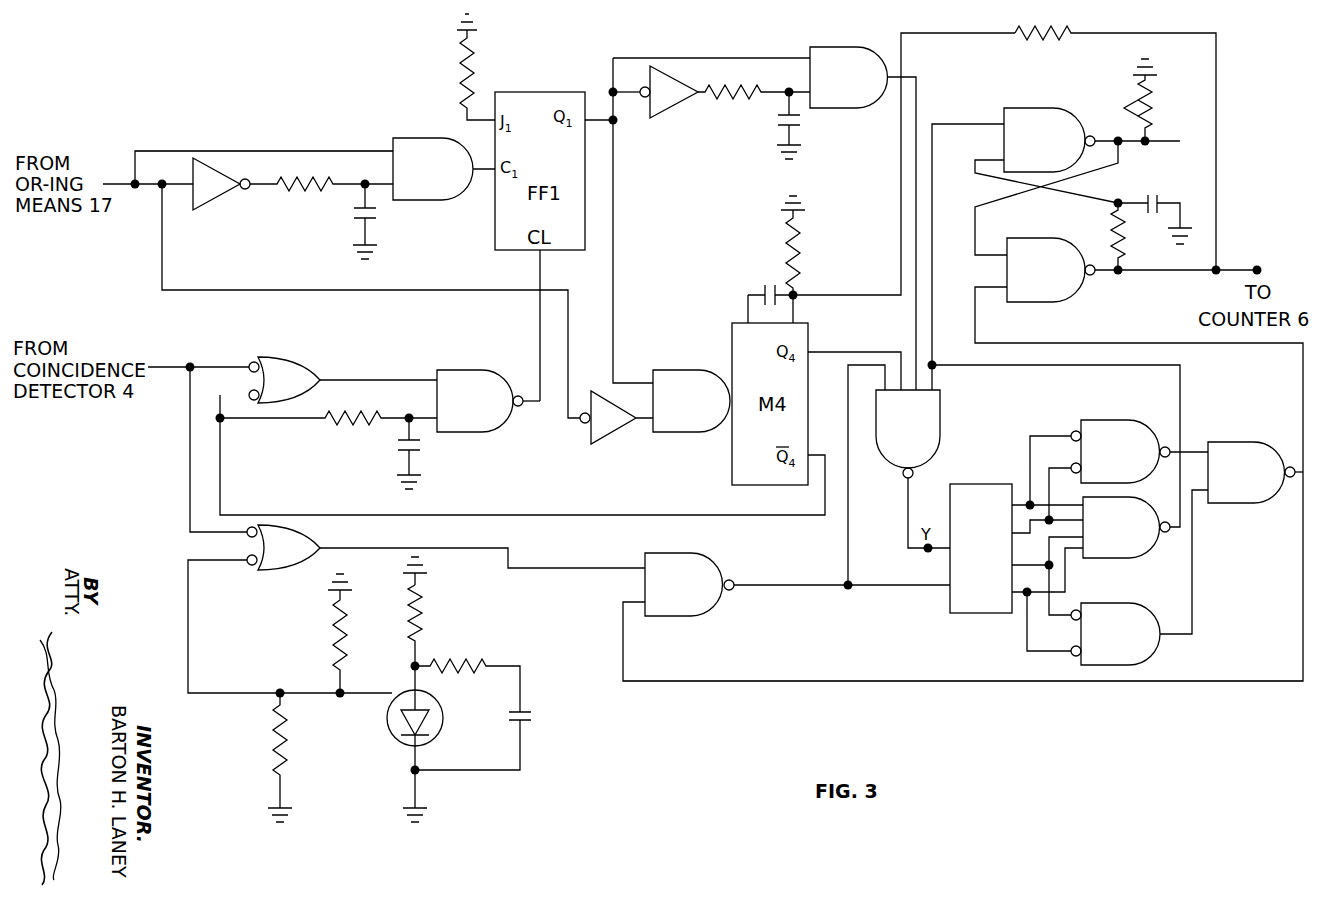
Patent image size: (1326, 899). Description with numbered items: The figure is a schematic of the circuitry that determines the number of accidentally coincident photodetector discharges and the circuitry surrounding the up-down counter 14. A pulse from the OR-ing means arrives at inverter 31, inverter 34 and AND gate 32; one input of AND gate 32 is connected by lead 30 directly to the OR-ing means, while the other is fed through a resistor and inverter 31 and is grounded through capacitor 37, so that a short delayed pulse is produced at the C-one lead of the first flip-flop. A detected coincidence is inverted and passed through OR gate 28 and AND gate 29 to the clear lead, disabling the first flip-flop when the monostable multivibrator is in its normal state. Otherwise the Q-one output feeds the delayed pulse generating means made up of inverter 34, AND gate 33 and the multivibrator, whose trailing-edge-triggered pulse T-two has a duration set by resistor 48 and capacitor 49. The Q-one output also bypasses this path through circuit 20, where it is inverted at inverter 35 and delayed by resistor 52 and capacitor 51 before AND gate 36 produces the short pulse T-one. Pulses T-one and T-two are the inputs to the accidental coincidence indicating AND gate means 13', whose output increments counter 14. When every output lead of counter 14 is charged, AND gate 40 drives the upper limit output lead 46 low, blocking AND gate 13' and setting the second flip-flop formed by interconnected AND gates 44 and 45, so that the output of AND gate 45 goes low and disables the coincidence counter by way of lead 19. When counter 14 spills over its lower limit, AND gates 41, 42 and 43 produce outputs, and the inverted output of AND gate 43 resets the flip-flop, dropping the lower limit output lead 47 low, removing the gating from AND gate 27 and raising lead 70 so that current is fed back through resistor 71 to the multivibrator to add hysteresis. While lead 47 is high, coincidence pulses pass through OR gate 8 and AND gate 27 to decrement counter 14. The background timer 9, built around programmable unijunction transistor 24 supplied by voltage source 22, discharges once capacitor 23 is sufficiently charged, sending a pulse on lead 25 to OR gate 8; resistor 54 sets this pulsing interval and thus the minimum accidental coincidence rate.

The OR gate 8 is at (446, 547).
The background timer 9 is at (424, 689).
The accidental coincidence indicating AND gate means 13' is at (913, 469).
The four bit reversible binary up-down counter 14 is at (1016, 543).
The lead 19 is at (1258, 266).
The circuit 20 is at (612, 104).
The voltage source 22 is at (432, 572).
The capacitor 23 is at (528, 712).
The programmable unijunction transistor 24 is at (403, 741).
The lead 25 is at (362, 696).
The AND gate 27 is at (797, 490).
The OR gate 28 is at (343, 380).
The AND gate 29 is at (488, 401).
The lead 30 is at (288, 150).
The inverter 31 is at (293, 184).
The AND gate 32 is at (444, 169).
The AND gate 33 is at (691, 401).
The inverter 34 is at (616, 417).
The inverter 35 is at (655, 92).
The AND gate 36 is at (863, 218).
The capacitor 37 is at (377, 217).
The AND gate 40 is at (1126, 527).
The AND gate 41 is at (1139, 451).
The AND gate 42 is at (1139, 577).
The AND gate 43 is at (1255, 472).
The AND gate 44 is at (1056, 249).
The AND gate 45 is at (963, 459).
The upper limit output lead 46 is at (1182, 401).
The lower limit output lead 47 is at (932, 683).
The resistor 48 is at (786, 258).
The capacitor 49 is at (762, 289).
The capacitor 51 is at (800, 126).
The resistor 52 is at (746, 100).
The resistor 54 is at (425, 631).
The lead 70 is at (993, 38).
The resistor 71 is at (1037, 40).